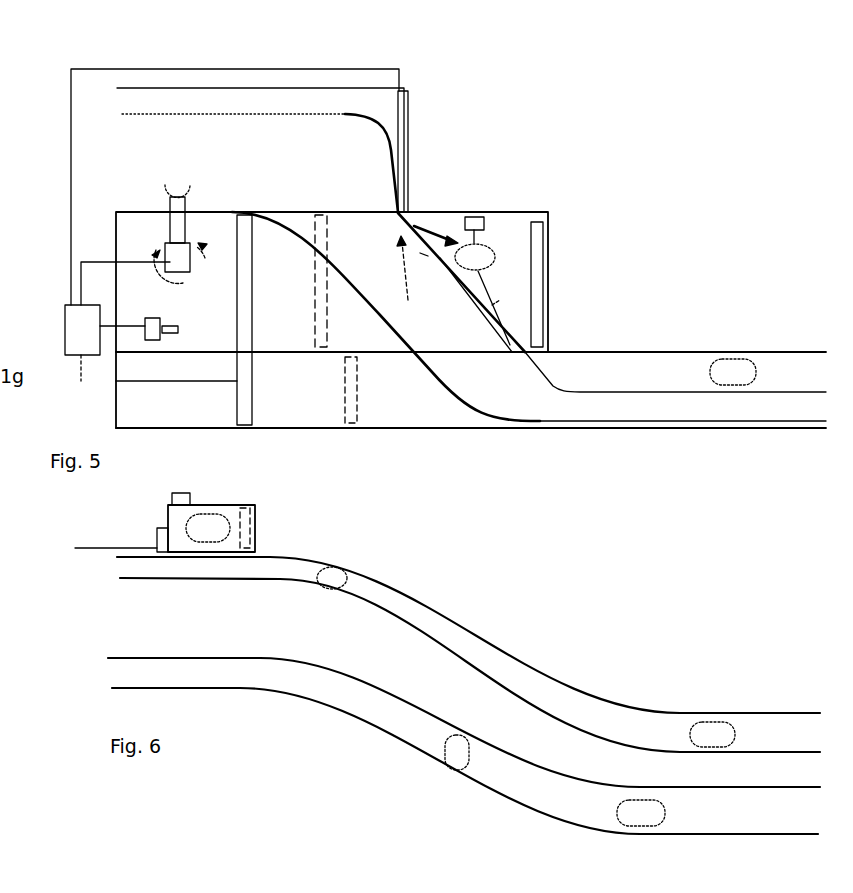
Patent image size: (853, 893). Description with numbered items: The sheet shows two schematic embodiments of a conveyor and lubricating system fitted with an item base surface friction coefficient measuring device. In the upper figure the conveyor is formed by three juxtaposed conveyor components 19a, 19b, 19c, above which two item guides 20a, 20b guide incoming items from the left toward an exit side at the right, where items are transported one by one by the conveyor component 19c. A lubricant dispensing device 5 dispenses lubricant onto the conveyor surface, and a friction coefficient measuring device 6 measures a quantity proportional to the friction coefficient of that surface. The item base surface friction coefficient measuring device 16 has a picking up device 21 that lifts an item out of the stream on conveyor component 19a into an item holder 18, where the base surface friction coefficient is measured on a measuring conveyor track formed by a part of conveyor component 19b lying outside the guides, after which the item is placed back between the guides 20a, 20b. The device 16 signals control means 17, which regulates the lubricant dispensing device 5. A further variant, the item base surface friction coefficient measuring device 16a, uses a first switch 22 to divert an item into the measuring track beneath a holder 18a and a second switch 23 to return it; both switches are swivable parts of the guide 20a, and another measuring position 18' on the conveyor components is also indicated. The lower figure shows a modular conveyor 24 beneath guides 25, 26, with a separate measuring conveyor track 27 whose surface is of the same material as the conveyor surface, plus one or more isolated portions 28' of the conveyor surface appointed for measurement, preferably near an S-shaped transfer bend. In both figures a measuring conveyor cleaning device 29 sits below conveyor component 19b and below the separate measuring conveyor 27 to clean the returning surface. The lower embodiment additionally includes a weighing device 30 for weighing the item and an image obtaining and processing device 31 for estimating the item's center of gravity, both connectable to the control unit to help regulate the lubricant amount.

In FIG. 5, the lubricant dispensing device 5 is at (410, 97).
In FIG. 5, the friction coefficient measuring device 6 is at (552, 218).
In FIG. 5, the item base surface friction coefficient measuring device 16 is at (108, 367).
In FIG. 5, the item base surface friction coefficient measuring device 16a is at (473, 154).
In FIG. 5, the control means 17 is at (117, 308).
In FIG. 5, the item holder 18 is at (181, 315).
In FIG. 5, the holder 18a is at (481, 250).
In FIG. 5, the position 18' is at (733, 336).
In FIG. 5, the conveyor component 19a is at (320, 163).
In FIG. 5, the conveyor component 19b is at (386, 316).
In FIG. 5, the conveyor component 19c is at (287, 395).
In FIG. 5, the item guide 20a is at (552, 381).
In FIG. 5, the item guide 20b is at (535, 428).
In FIG. 5, the picking up device 21 is at (173, 225).
In FIG. 5, the first switch 22 is at (448, 283).
In FIG. 5, the second switch 23 is at (497, 320).
In FIG. 6, the modular conveyor 24 is at (420, 612).
In FIG. 6, the guide 25 is at (485, 640).
In FIG. 6, the guide 26 is at (370, 680).
In FIG. 6, the separate measuring conveyor track 27 is at (231, 505).
In FIG. 6, the isolated portions 28' is at (526, 683).
In FIG. 5, the measuring conveyor cleaning device 29 is at (321, 347).
In FIG. 6, the weighing device 30 is at (189, 501).
In FIG. 6, the image obtaining and processing device 31 is at (198, 528).